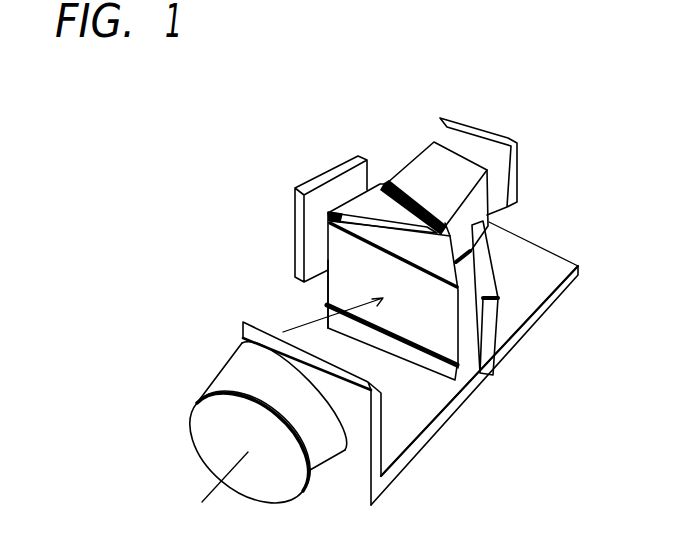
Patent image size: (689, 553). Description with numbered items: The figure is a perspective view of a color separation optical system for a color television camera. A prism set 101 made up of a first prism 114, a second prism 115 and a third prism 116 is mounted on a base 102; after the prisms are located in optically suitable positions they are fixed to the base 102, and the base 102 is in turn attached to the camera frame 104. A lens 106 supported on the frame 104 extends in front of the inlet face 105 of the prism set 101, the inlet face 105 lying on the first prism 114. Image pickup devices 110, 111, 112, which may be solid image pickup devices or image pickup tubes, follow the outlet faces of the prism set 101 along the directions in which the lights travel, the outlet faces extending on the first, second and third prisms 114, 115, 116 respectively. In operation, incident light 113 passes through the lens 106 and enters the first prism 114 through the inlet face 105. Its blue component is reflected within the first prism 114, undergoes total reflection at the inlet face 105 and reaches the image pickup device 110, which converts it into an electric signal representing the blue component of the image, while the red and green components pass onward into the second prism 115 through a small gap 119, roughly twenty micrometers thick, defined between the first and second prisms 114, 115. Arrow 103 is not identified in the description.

The prism set 101 is at (382, 263).
The base 102 is at (450, 388).
The optical axis / light direction arrow 103 is at (360, 311).
The frame 104 is at (398, 468).
The inlet face 105 is at (427, 340).
The lens 106 is at (320, 455).
The image pickup device 110 is at (488, 278).
The image pickup device 111 is at (332, 175).
The image pickup device 112 is at (508, 140).
The incident light 113 is at (325, 292).
The first prism 114 is at (340, 243).
The second prism 115 is at (366, 188).
The third prism 116 is at (433, 141).
The gap 119 is at (338, 203).